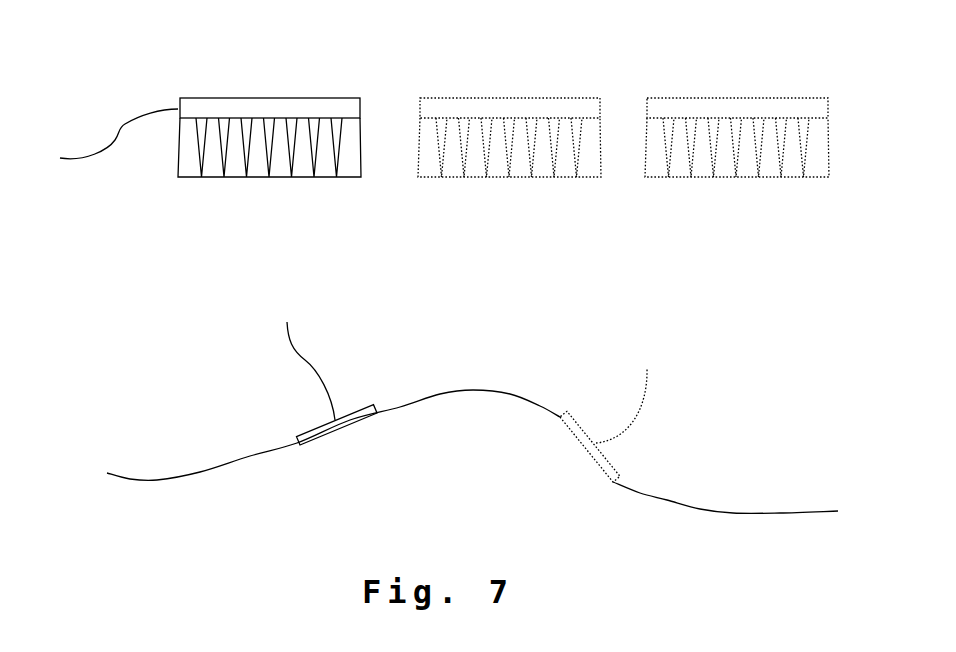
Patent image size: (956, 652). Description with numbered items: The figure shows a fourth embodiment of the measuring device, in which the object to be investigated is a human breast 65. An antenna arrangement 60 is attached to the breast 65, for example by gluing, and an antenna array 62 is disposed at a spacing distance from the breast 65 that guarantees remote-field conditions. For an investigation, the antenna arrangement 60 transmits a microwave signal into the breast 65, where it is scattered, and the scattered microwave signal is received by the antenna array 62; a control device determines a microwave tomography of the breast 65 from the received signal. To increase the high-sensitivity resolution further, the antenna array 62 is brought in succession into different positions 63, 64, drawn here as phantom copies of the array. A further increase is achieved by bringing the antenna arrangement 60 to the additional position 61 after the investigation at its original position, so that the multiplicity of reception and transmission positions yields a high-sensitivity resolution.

The antenna arrangement 60 is at (313, 428).
The additional position 61 is at (615, 465).
The antenna array 62 is at (225, 97).
The position 63 is at (420, 105).
The position 64 is at (647, 110).
The human breast 65 is at (512, 394).